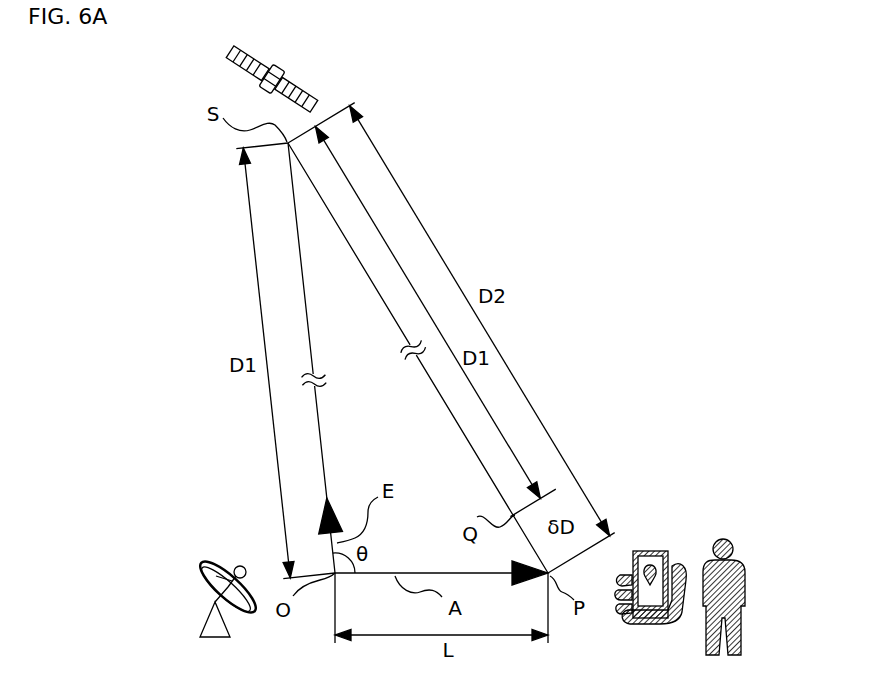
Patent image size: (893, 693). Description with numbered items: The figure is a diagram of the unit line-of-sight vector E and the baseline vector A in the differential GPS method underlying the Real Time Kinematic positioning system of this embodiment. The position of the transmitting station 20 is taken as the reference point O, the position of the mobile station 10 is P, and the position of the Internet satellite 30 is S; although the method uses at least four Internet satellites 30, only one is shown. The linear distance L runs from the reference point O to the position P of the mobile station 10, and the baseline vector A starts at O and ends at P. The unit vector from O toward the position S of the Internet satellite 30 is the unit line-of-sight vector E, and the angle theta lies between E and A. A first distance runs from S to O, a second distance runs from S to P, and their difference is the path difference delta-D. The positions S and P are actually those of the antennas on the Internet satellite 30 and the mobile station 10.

The mobile station 10 is at (653, 545).
The transmitting station 20 is at (200, 560).
The Internet satellite 30 is at (290, 72).